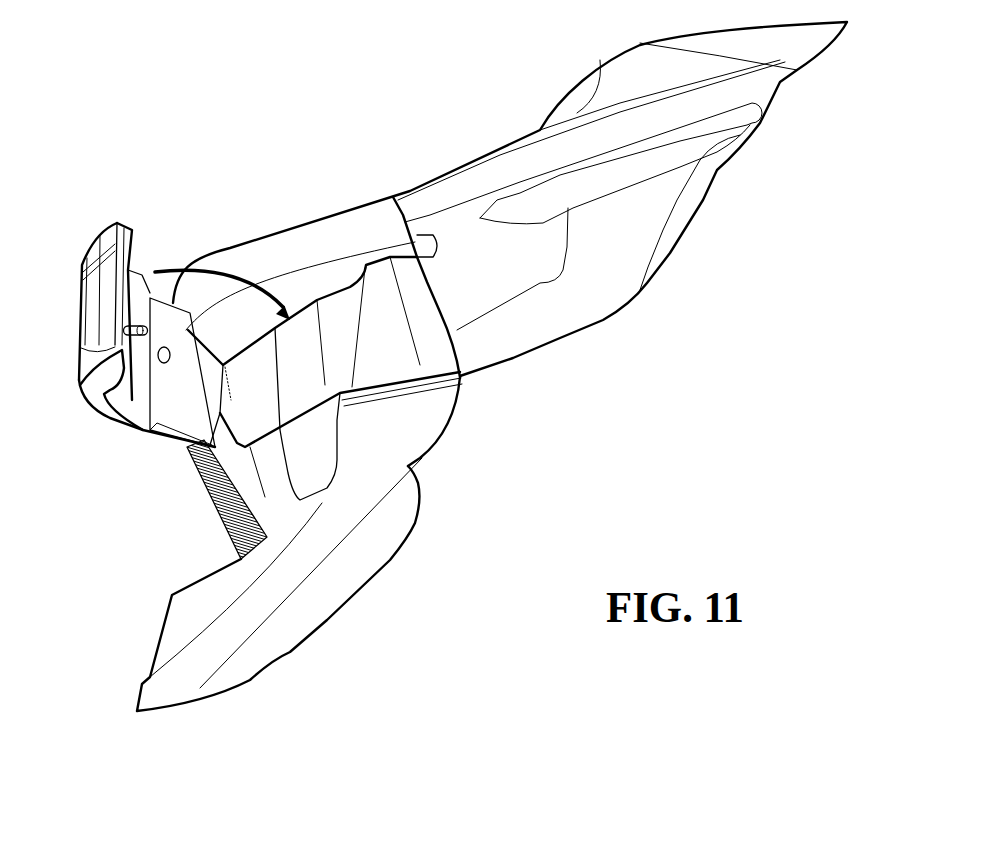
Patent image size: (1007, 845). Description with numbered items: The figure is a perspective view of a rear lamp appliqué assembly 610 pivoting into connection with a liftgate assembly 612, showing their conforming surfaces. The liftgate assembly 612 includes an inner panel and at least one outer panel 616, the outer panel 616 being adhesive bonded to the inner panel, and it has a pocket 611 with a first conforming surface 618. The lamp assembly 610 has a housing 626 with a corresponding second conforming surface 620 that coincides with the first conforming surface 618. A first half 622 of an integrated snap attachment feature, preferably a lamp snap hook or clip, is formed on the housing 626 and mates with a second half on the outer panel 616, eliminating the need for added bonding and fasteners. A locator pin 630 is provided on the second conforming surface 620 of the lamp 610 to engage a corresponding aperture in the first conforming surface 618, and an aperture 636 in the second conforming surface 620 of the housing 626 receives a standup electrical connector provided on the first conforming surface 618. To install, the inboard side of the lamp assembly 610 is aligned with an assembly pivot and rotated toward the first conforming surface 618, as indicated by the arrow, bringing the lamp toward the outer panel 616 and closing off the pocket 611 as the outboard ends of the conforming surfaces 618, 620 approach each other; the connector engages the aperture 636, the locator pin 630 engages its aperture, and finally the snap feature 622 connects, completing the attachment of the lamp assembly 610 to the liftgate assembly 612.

The rear lamp appliqué assembly 610 is at (70, 233).
The pocket 611 is at (259, 497).
The liftgate assembly 612 is at (332, 643).
The outer panel 616 is at (337, 233).
The first conforming surface 618 is at (400, 357).
The second conforming surface 620 is at (137, 383).
The first half of integrated snap feature 622 is at (136, 249).
The housing 626 is at (80, 385).
The locator pin 630 is at (131, 324).
The aperture 636 is at (170, 364).